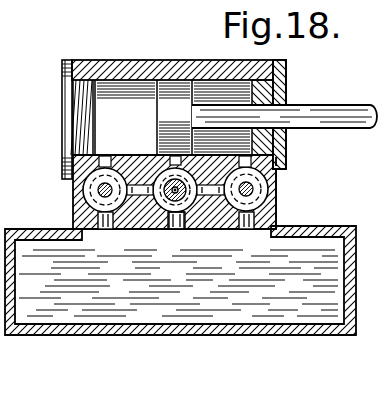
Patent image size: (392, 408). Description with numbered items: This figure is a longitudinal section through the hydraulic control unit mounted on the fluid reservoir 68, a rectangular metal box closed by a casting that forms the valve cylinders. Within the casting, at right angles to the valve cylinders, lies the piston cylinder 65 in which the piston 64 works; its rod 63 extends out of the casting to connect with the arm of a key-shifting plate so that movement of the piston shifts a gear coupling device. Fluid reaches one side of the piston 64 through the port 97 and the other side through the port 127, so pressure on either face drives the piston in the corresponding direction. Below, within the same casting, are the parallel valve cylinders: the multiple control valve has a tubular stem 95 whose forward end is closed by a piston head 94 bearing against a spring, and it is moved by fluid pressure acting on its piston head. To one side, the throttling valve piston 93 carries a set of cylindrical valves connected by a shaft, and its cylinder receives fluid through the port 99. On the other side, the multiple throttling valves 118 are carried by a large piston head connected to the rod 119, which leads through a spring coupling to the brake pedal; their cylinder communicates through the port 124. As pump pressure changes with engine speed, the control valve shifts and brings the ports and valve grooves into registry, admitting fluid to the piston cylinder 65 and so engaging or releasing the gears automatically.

The rod 63 is at (317, 112).
The piston 64 is at (181, 97).
The cylinder 65 is at (118, 92).
The fluid reservoir 68 is at (331, 225).
The throttling valve piston 93 is at (92, 188).
The piston head 94 is at (169, 226).
The tubular stem 95 is at (190, 226).
The port 97 is at (64, 168).
The port 99 is at (104, 163).
The multiple throttling valves 118 is at (279, 180).
The rod 119 is at (278, 192).
The port 124 is at (211, 182).
The port 127 is at (279, 161).